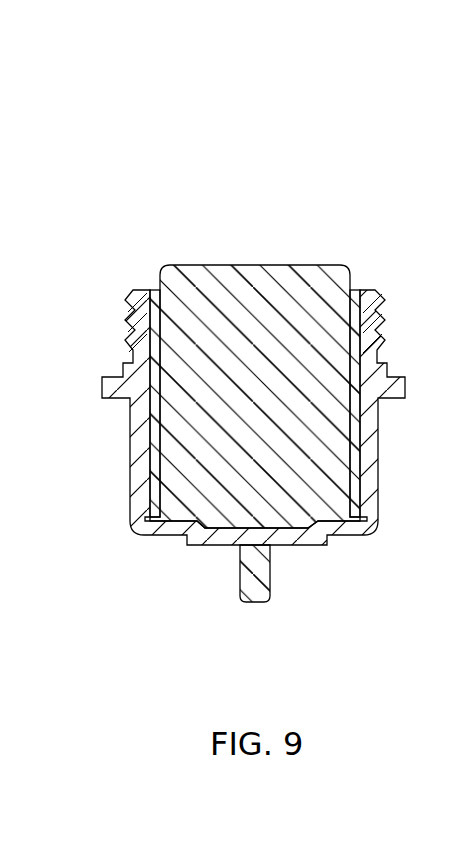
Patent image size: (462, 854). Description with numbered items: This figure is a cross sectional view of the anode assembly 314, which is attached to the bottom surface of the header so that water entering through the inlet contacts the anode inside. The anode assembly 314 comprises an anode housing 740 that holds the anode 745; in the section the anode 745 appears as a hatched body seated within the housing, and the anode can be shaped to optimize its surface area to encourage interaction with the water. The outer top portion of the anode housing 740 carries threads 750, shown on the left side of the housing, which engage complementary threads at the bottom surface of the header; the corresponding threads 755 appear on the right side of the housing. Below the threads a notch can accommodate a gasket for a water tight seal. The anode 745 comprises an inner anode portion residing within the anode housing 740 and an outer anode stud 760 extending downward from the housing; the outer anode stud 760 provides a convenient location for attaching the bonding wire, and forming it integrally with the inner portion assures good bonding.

The anode assembly 314 is at (99, 112).
The anode housing 740 is at (133, 522).
The anode 745 is at (233, 265).
The threads 750 is at (132, 293).
The right thread 755 is at (383, 348).
The outer anode stud 760 is at (243, 597).